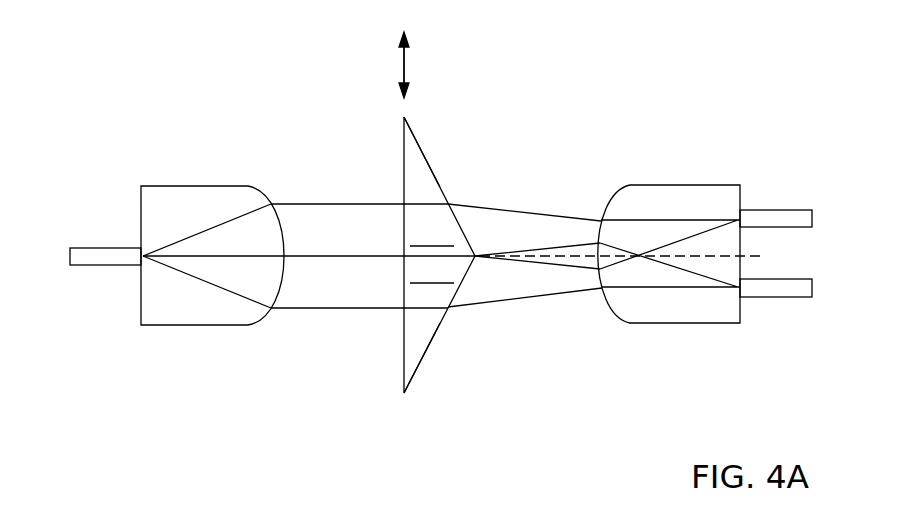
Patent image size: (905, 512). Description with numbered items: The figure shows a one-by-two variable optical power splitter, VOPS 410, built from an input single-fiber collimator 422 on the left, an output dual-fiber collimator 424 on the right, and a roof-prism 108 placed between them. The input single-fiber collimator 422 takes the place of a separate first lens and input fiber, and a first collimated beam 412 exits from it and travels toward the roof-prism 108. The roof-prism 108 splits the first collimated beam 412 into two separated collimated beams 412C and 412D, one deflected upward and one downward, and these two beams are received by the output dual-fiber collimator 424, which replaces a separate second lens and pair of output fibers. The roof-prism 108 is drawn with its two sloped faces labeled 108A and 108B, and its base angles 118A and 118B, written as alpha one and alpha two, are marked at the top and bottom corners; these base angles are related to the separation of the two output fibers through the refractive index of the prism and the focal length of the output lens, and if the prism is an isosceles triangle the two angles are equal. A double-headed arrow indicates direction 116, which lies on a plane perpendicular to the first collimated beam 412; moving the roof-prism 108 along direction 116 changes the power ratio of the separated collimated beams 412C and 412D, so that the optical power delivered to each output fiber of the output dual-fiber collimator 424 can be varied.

The VOPS 410 is at (213, 71).
The direction 116 is at (405, 73).
The base angle 118A is at (413, 150).
The base angle 118B is at (413, 358).
The roof-prism 108 is at (435, 178).
The first prism portion 108A is at (432, 236).
The second prism portion 108B is at (432, 273).
The first collimated beam 412 is at (298, 204).
The separated collimated beam 412C is at (512, 210).
The separated collimated beam 412D is at (510, 299).
The input single-fiber collimator 422 is at (207, 187).
The output dual-fiber collimator 424 is at (667, 185).